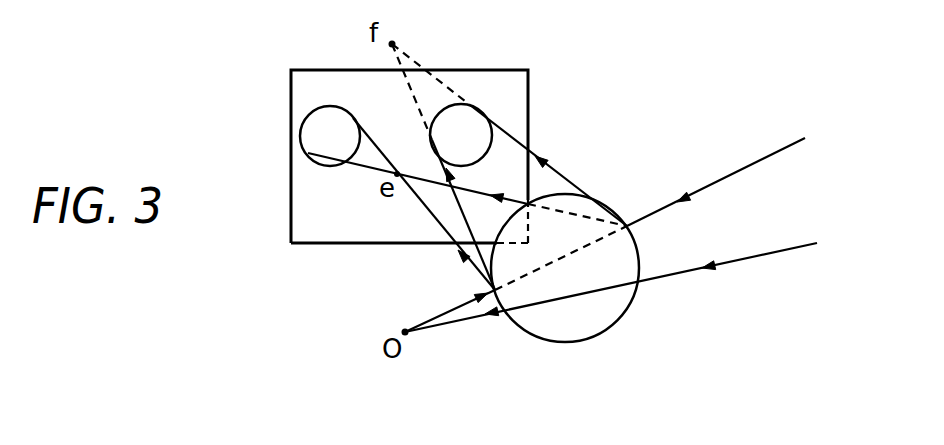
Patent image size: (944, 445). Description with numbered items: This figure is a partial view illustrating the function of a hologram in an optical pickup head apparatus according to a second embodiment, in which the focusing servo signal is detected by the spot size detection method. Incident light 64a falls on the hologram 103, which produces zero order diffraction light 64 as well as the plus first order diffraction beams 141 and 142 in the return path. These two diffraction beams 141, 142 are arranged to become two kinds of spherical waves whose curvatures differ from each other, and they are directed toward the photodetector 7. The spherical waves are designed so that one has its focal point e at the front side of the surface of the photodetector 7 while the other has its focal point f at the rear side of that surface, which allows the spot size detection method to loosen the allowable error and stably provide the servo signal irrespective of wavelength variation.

The photodetector 7 is at (327, 70).
The +1st diffraction beam 141 is at (364, 160).
The +1st diffraction beam 142 is at (503, 157).
The hologram 103 is at (627, 313).
The 0 order diffraction light 64 is at (448, 319).
The incident light 64a is at (703, 217).